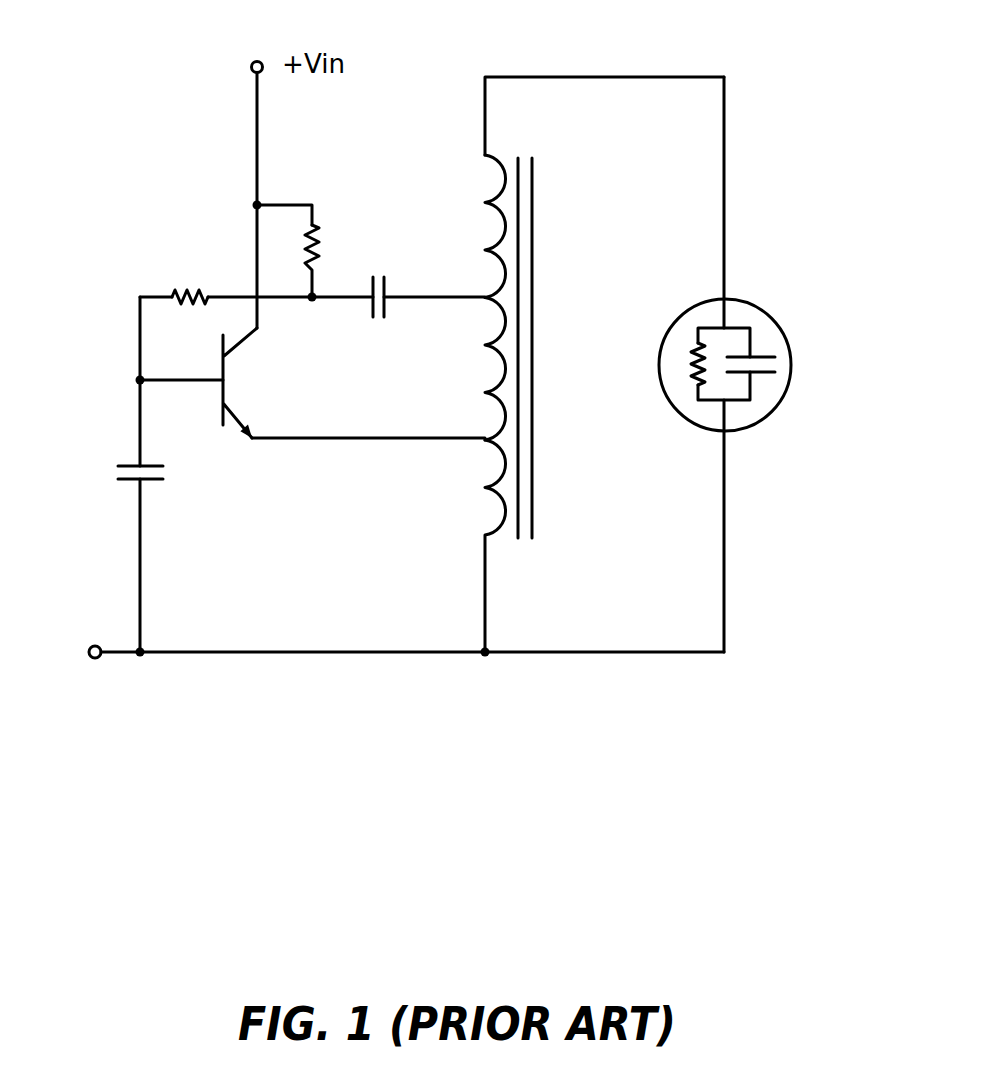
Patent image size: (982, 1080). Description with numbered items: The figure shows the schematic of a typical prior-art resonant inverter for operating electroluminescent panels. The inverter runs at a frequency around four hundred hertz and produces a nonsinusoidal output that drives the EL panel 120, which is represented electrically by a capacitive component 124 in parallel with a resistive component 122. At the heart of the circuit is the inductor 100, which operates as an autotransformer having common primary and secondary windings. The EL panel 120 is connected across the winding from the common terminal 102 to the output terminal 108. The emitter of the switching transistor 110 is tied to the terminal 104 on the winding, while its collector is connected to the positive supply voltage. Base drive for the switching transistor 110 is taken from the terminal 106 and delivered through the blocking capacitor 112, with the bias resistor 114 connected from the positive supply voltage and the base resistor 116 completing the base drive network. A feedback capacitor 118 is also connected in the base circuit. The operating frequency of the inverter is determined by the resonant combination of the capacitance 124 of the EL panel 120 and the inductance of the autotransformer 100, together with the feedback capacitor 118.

The inductor 100 is at (545, 168).
The common terminal 102 is at (495, 557).
The terminal 104 is at (457, 448).
The terminal 106 is at (480, 290).
The output terminal 108 is at (503, 73).
The switching transistor 110 is at (227, 437).
The blocking capacitor 112 is at (363, 323).
The bias resistor 114 is at (327, 230).
The base resistor 116 is at (180, 283).
The feedback capacitor 118 is at (117, 455).
The EL panel 120 is at (788, 310).
The resistive component 122 is at (693, 382).
The capacitive component 124 is at (762, 380).